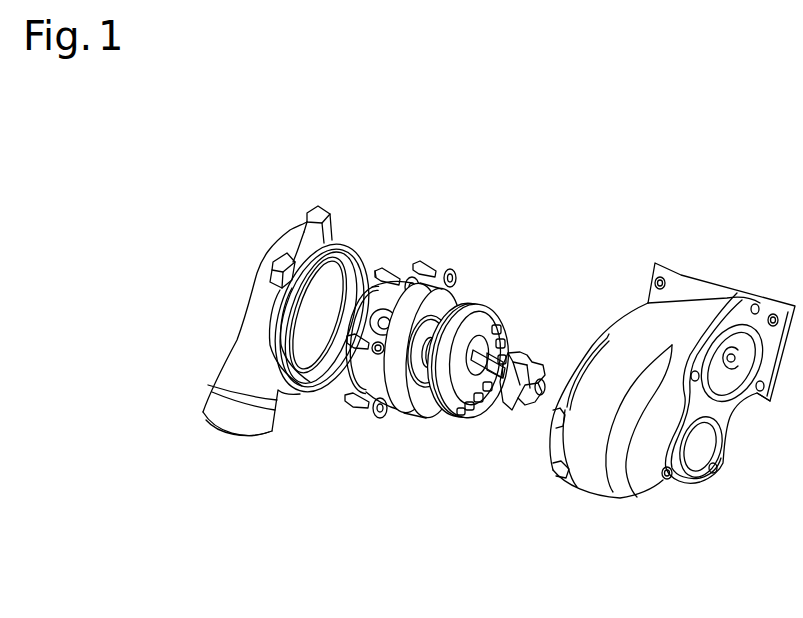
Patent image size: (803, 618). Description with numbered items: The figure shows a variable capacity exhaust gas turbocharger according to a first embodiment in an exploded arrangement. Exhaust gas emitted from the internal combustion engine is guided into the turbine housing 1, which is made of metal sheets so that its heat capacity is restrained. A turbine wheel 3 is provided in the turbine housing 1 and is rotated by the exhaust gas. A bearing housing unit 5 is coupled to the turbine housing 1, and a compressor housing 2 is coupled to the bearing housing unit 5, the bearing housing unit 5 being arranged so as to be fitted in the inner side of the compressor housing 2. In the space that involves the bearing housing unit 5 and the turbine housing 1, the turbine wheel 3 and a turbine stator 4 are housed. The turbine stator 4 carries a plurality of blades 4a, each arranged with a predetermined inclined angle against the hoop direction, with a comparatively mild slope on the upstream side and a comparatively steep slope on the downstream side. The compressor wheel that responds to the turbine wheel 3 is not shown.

The turbine housing 1 is at (588, 481).
The compressor housing 2 is at (250, 306).
The turbine wheel 3 is at (520, 421).
The turbine stator 4 is at (447, 421).
The blades 4a is at (472, 421).
The bearing housing unit 5 is at (413, 438).